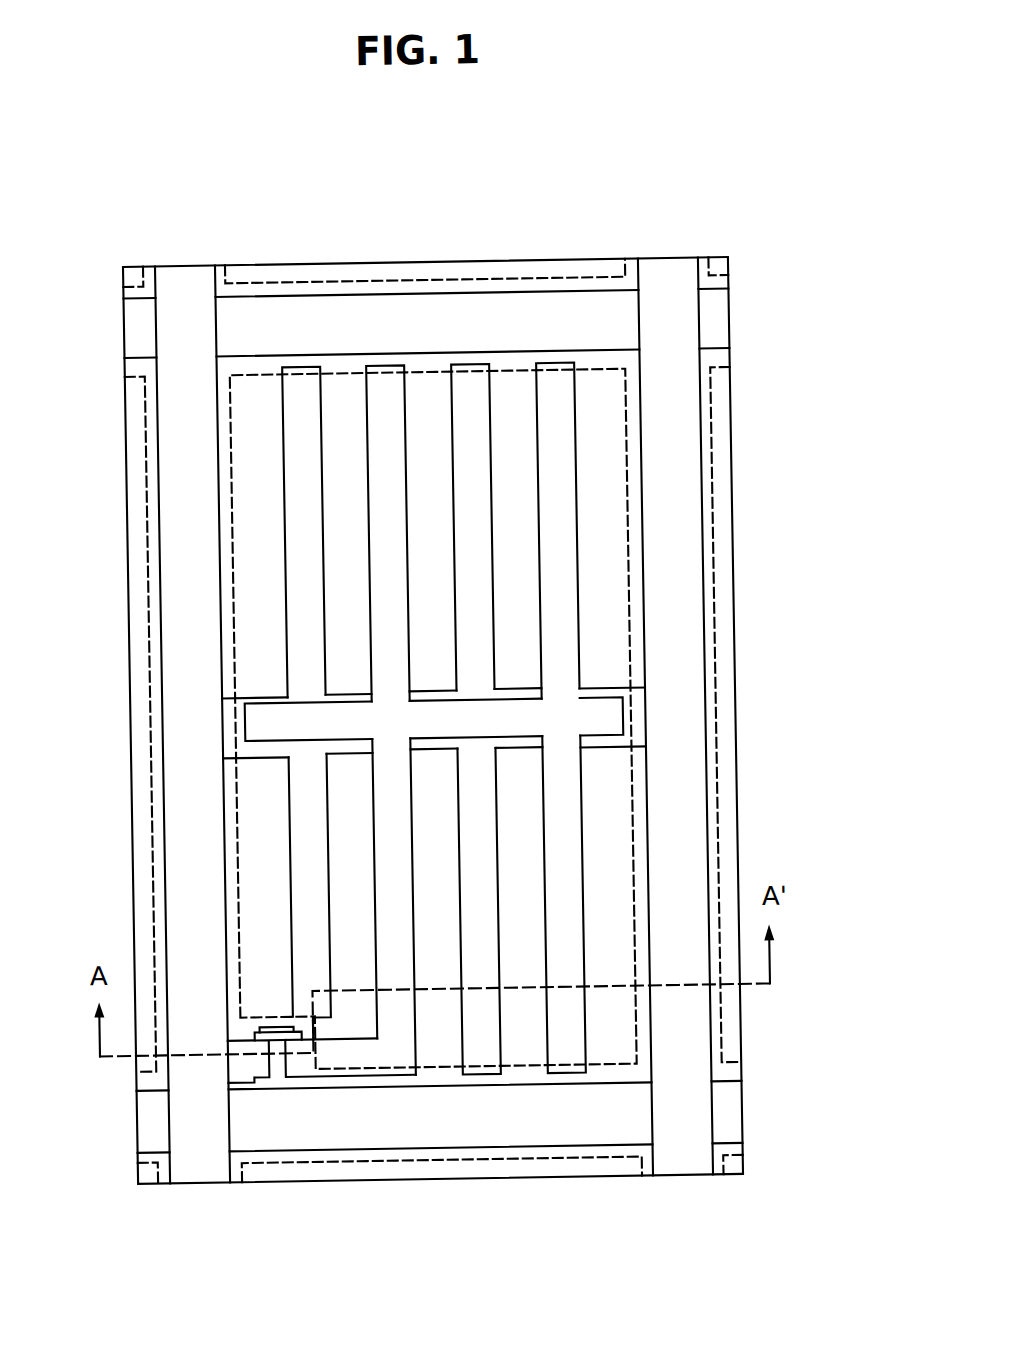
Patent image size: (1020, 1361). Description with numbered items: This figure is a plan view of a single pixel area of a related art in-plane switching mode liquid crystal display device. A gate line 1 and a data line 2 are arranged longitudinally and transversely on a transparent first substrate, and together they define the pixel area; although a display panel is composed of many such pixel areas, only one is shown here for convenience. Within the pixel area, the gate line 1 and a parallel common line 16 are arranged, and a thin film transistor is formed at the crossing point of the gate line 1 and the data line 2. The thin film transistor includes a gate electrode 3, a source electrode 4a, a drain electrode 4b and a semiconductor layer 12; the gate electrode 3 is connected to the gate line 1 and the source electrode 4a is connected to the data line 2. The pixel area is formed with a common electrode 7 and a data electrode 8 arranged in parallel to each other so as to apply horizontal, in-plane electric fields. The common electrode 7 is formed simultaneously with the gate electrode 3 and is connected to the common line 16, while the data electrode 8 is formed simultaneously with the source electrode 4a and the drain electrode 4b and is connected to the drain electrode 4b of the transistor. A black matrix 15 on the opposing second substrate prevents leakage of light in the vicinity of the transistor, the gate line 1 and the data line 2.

The gate line 1 is at (722, 1120).
The data line 2 is at (681, 1156).
The gate electrode 3 is at (269, 1087).
The source electrode 4a is at (236, 1067).
The drain electrode 4b is at (302, 1065).
The common electrode 7 is at (478, 1063).
The data electrode 8 is at (562, 1064).
The semiconductor layer 12 is at (275, 1032).
The black matrix 15 is at (721, 812).
The common line 16 is at (735, 715).